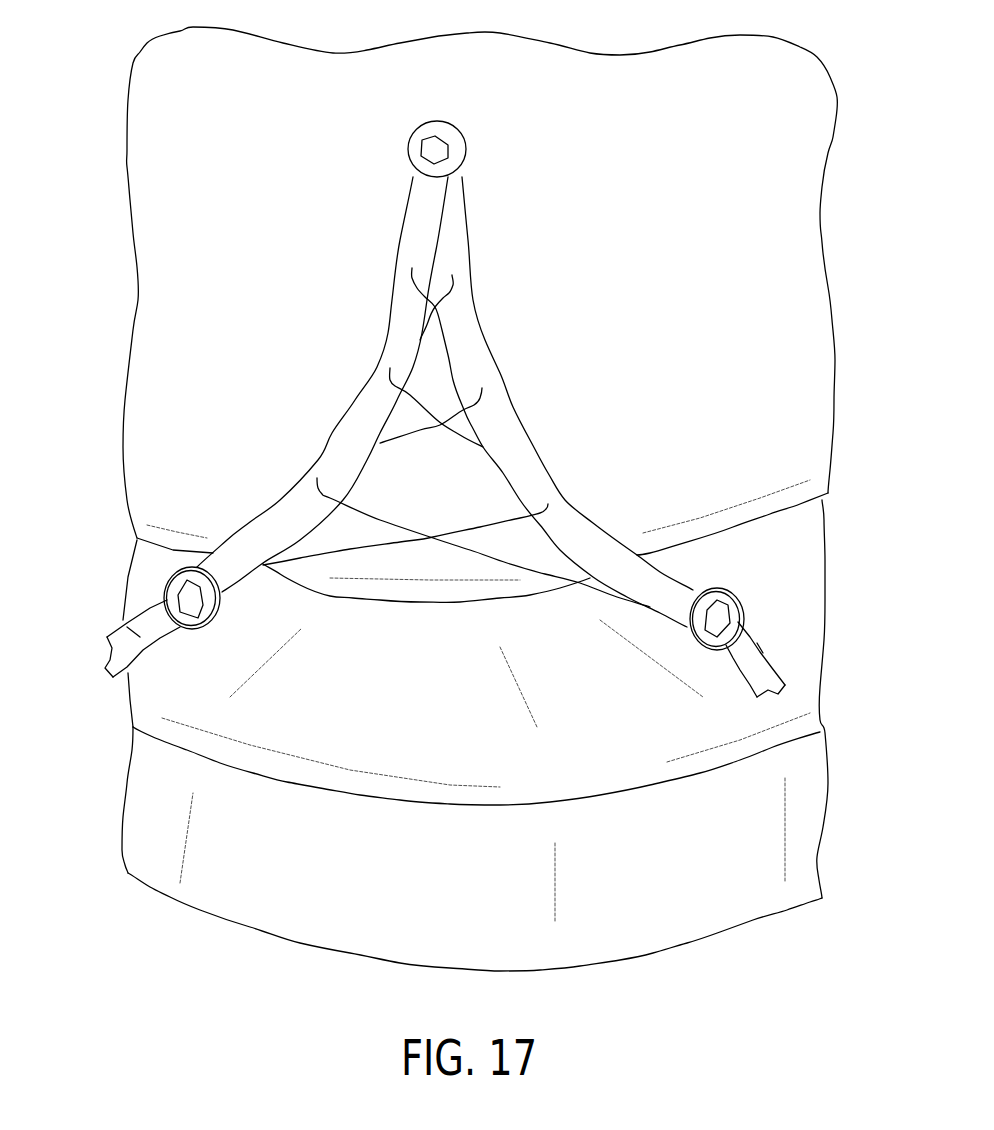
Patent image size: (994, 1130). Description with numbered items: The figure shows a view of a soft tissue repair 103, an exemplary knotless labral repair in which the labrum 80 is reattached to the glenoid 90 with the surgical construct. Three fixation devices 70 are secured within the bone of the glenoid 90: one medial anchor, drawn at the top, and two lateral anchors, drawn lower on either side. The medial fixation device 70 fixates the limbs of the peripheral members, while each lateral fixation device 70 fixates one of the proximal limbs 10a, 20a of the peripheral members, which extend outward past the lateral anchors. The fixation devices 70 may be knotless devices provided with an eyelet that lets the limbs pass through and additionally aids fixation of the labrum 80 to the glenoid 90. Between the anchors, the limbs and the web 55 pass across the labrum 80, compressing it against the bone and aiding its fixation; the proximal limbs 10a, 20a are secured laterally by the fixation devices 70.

The fixation device 70 is at (474, 325).
The labrum 80 is at (517, 314).
The glenoid 90 is at (475, 735).
The soft tissue repair 103 is at (556, 384).
The web 55 is at (456, 538).
The proximal limb of first peripheral member 10a is at (106, 632).
The proximal limb of second peripheral member 20a is at (807, 655).